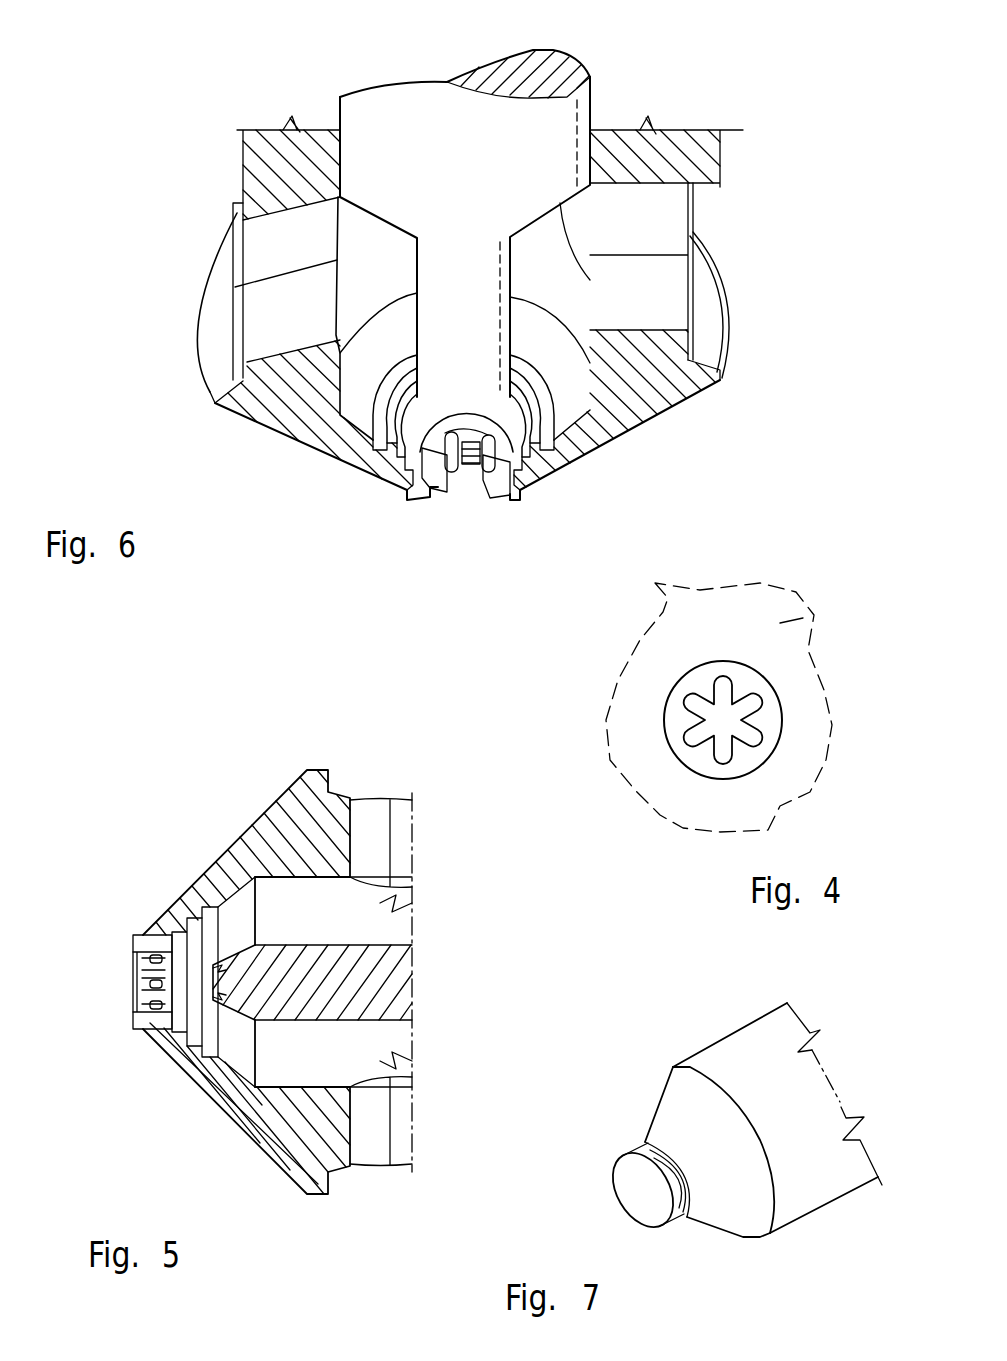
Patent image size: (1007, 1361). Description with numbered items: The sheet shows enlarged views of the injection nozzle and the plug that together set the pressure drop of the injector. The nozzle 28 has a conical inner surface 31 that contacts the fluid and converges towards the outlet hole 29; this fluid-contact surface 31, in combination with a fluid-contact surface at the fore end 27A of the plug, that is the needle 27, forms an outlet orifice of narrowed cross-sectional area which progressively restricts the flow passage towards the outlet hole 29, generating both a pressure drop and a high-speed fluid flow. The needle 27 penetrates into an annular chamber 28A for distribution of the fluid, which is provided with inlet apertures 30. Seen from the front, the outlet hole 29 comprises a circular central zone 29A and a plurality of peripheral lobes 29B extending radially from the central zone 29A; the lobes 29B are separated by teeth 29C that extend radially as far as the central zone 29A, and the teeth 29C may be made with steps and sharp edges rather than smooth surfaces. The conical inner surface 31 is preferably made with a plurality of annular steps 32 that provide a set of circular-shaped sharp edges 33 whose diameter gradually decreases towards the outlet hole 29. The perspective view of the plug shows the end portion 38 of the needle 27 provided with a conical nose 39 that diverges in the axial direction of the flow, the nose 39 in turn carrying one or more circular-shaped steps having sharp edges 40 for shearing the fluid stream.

In FIG. 6, the needle 27 is at (392, 108).
In FIG. 6, the fore end of the plug 27A is at (435, 262).
In FIG. 5, the fore end of the plug 27A is at (387, 981).
In FIG. 7, the fore end of the plug 27A is at (748, 1045).
In FIG. 6, the nozzle 28 is at (275, 410).
In FIG. 4, the nozzle 28 is at (826, 618).
In FIG. 5, the nozzle 28 is at (290, 810).
In FIG. 5, the annular chamber 28A is at (380, 903).
In FIG. 6, the outlet hole 29 is at (438, 534).
In FIG. 4, the outlet hole 29 is at (713, 753).
In FIG. 5, the outlet hole 29 is at (102, 971).
In FIG. 6, the circular central zone 29A is at (452, 483).
In FIG. 4, the circular central zone 29A is at (735, 718).
In FIG. 6, the peripheral lobes 29B is at (458, 455).
In FIG. 4, the peripheral lobes 29B is at (688, 698).
In FIG. 6, the teeth 29C is at (494, 482).
In FIG. 4, the teeth 29C is at (740, 748).
In FIG. 5, the teeth 29C is at (133, 958).
In FIG. 6, the inlet apertures 30 is at (255, 248).
In FIG. 5, the inlet apertures 30 is at (365, 813).
In FIG. 5, the conical inner surface 31 is at (245, 882).
In FIG. 6, the annular steps 32 is at (397, 450).
In FIG. 5, the annular steps 32 is at (190, 1058).
In FIG. 6, the sharp edges 33 is at (560, 437).
In FIG. 5, the sharp edges 33 is at (173, 940).
In FIG. 7, the end portion of the needle 38 is at (675, 1100).
In FIG. 7, the conical nose 39 is at (628, 1180).
In FIG. 7, the sharp edges 40 is at (677, 1218).